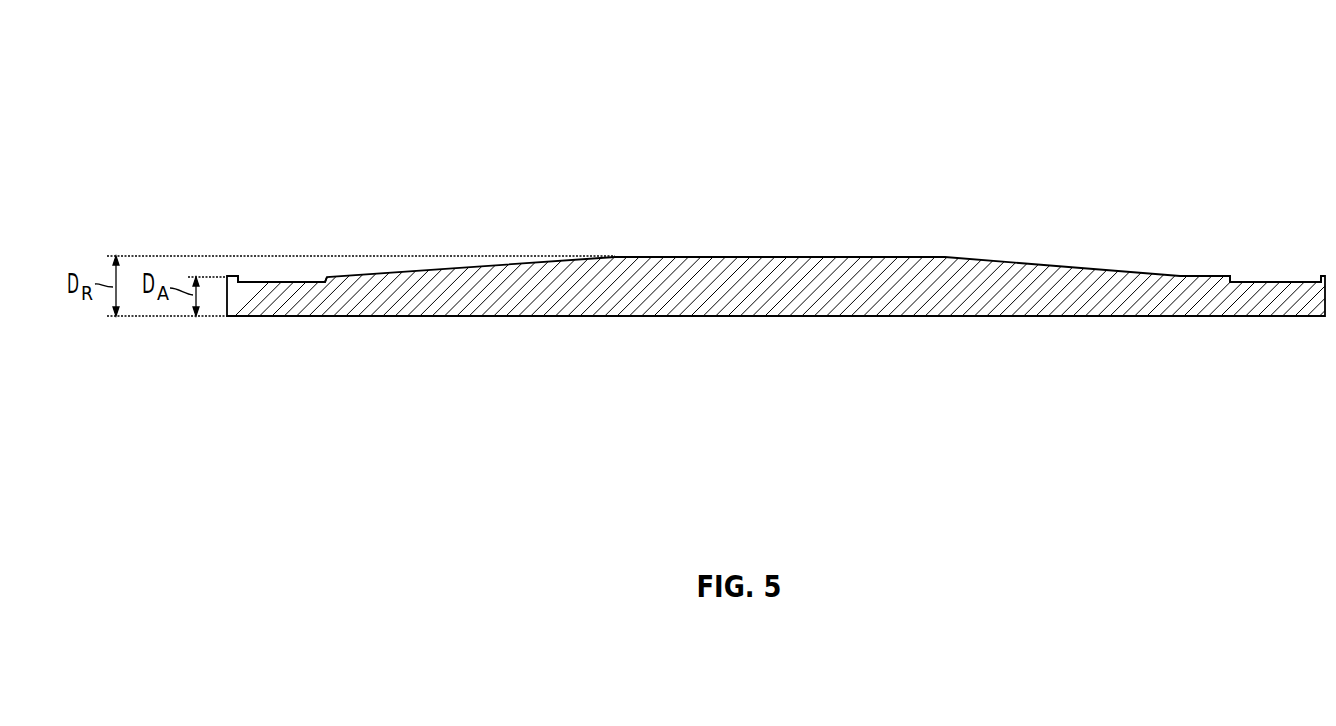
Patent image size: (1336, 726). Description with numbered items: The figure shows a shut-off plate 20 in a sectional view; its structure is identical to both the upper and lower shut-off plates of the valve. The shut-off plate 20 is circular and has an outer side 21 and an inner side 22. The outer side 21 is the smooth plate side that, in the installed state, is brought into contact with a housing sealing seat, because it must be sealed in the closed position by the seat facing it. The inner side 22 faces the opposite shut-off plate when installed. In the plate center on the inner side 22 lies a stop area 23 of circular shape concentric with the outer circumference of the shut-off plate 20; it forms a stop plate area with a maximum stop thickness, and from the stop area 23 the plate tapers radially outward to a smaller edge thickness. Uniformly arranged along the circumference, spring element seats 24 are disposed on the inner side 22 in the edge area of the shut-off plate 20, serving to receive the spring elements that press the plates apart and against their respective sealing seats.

The shut-off plate 20 is at (1183, 110).
The outer side 21 is at (750, 317).
The inner side 22 is at (672, 257).
The stop area 23 is at (768, 257).
The spring element seats 24 is at (276, 280).